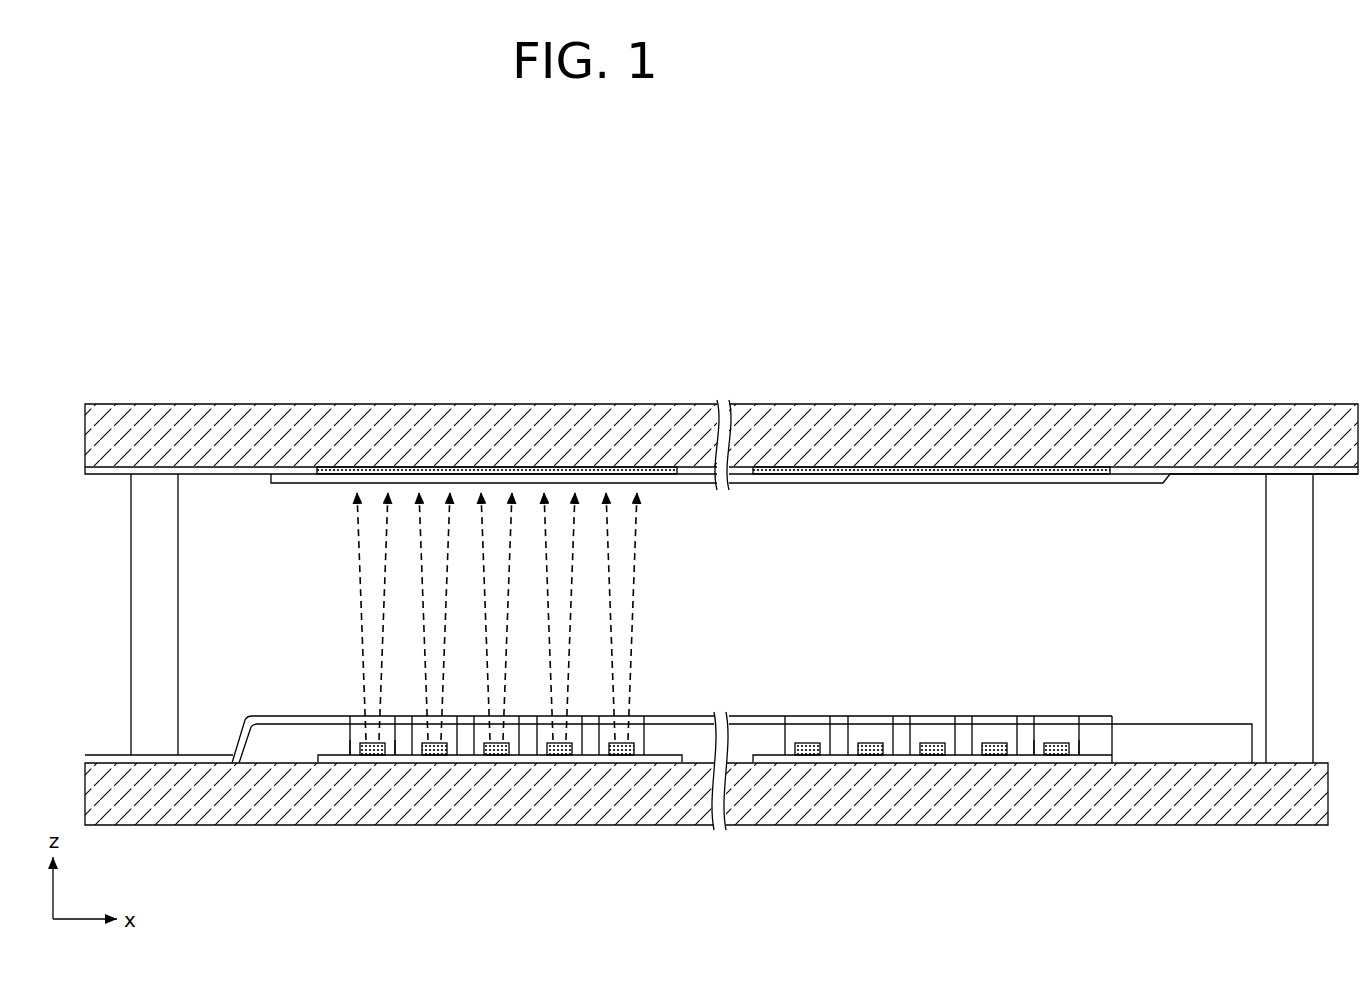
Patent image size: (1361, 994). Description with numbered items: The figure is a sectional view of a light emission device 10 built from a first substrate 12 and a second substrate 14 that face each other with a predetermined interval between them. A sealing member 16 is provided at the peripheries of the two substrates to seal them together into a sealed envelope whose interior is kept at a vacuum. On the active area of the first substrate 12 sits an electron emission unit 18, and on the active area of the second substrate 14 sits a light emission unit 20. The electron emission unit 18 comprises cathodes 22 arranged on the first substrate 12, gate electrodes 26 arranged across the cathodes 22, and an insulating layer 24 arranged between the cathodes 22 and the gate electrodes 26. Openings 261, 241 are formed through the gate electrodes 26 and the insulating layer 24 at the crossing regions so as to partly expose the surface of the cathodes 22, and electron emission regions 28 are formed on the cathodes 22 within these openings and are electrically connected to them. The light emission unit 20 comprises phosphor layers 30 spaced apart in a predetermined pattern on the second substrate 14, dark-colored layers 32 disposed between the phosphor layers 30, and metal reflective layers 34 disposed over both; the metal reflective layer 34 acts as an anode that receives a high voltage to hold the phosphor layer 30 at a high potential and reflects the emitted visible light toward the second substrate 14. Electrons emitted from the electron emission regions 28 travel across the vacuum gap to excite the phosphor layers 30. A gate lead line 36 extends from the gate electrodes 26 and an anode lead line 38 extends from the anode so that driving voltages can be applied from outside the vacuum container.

The light emission device 10 is at (721, 591).
The first substrate 12 is at (984, 800).
The second substrate 14 is at (793, 420).
The sealing member 16 is at (1303, 633).
The electron emission unit 18 is at (742, 752).
The light emission unit 20 is at (720, 456).
The cathode 22 is at (468, 757).
The insulating layer 24 is at (1157, 742).
The gate electrode 26 is at (680, 716).
The electron emission region 28 is at (932, 745).
The phosphor layer 30 is at (510, 466).
The dark-colored layer 32 is at (697, 470).
The metal reflective layer 34 is at (597, 482).
The gate lead line 36 is at (105, 758).
The anode lead line 38 is at (1337, 473).
The opening of insulating layer 241 is at (1057, 742).
The opening of gate electrode 261 is at (812, 735).